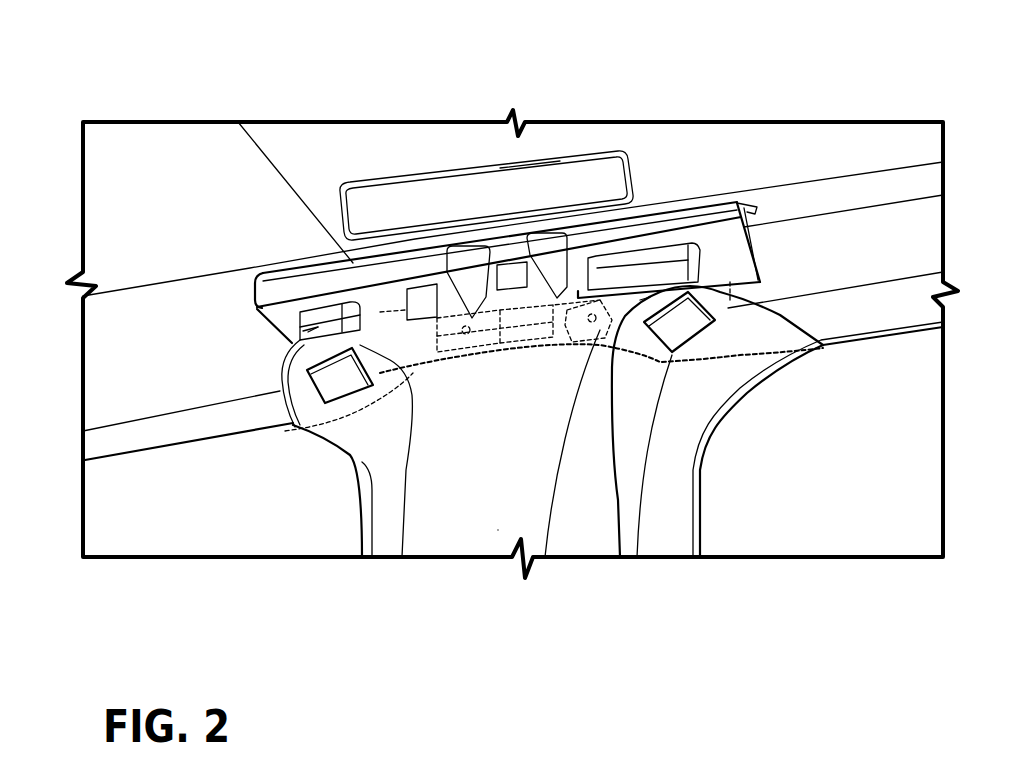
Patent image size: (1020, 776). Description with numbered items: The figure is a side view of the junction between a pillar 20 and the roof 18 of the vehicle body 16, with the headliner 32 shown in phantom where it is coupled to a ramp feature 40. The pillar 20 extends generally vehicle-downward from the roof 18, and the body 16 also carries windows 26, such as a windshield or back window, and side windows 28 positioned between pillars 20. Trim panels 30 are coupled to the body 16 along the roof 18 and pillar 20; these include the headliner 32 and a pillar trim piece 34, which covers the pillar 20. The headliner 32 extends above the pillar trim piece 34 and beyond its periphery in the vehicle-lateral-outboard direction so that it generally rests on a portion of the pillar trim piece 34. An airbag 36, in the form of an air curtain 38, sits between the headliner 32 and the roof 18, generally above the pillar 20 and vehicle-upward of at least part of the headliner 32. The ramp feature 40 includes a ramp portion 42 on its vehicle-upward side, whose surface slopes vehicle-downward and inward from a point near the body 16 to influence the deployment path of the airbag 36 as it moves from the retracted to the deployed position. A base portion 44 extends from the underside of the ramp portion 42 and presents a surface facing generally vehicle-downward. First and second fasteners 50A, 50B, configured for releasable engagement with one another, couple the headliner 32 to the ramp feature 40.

The body 16 is at (317, 172).
The roof 18 is at (380, 150).
The pillar 20 is at (372, 377).
The windows 26 is at (128, 513).
The side windows 28 is at (122, 527).
The trim panels 30 is at (180, 300).
The headliner 32 is at (487, 365).
The pillar trim piece 34 is at (498, 530).
The airbag 36 is at (521, 202).
The air curtain 38 is at (440, 200).
The ramp feature 40 is at (690, 200).
The ramp portion 42 is at (670, 275).
The base portion 44 is at (757, 277).
The first fastener 50A is at (337, 380).
The second fastener 50B is at (318, 327).